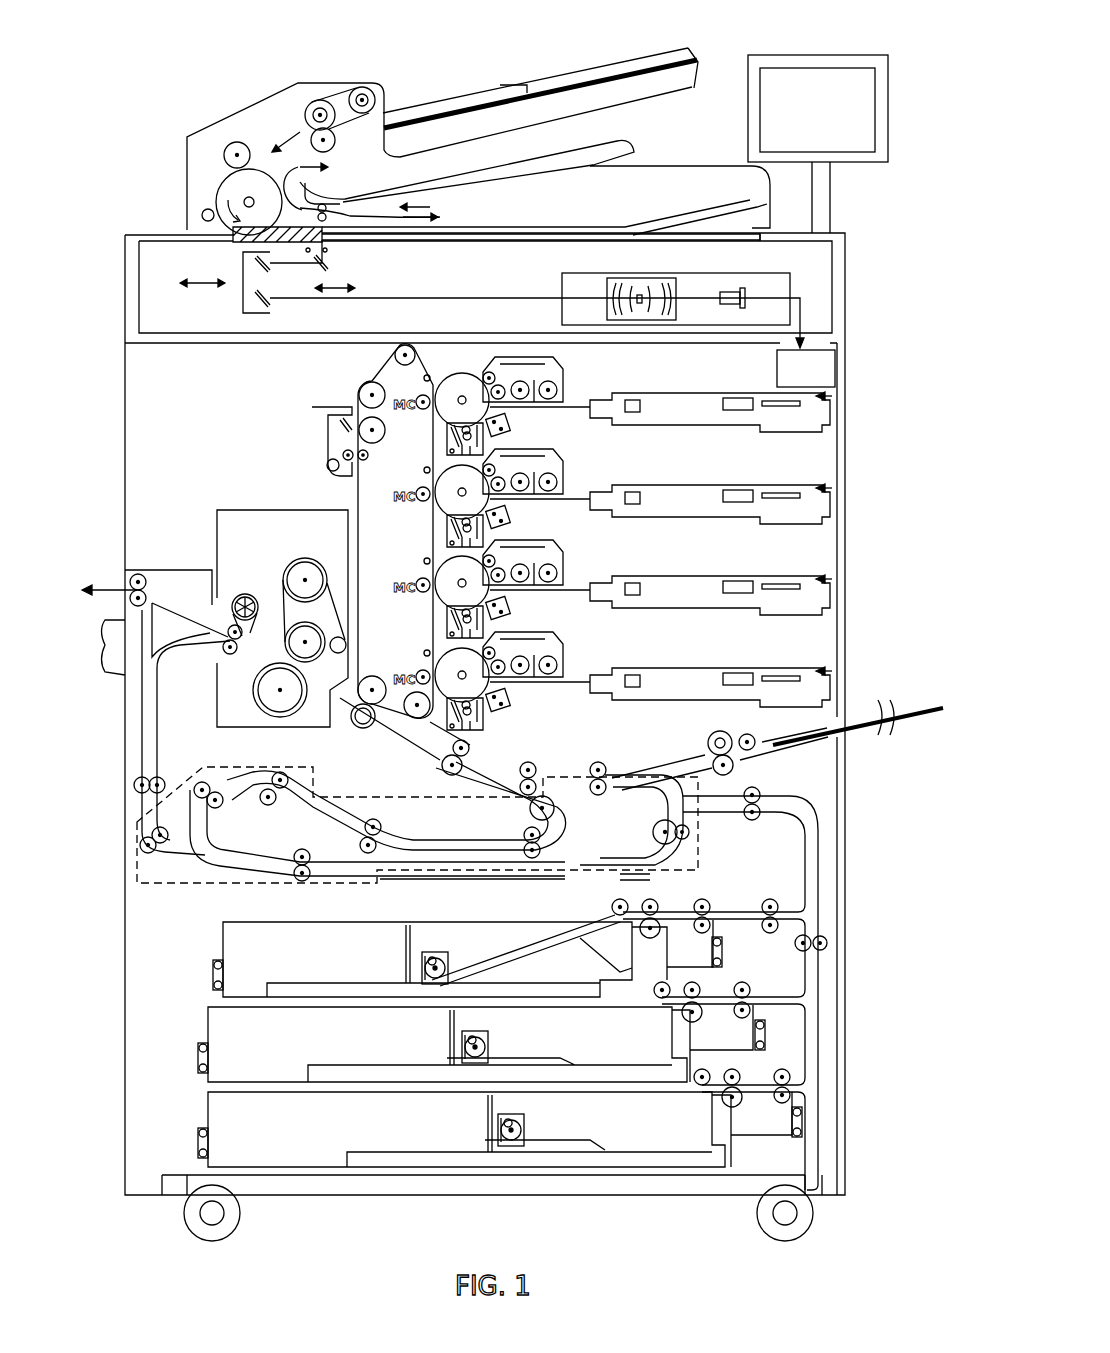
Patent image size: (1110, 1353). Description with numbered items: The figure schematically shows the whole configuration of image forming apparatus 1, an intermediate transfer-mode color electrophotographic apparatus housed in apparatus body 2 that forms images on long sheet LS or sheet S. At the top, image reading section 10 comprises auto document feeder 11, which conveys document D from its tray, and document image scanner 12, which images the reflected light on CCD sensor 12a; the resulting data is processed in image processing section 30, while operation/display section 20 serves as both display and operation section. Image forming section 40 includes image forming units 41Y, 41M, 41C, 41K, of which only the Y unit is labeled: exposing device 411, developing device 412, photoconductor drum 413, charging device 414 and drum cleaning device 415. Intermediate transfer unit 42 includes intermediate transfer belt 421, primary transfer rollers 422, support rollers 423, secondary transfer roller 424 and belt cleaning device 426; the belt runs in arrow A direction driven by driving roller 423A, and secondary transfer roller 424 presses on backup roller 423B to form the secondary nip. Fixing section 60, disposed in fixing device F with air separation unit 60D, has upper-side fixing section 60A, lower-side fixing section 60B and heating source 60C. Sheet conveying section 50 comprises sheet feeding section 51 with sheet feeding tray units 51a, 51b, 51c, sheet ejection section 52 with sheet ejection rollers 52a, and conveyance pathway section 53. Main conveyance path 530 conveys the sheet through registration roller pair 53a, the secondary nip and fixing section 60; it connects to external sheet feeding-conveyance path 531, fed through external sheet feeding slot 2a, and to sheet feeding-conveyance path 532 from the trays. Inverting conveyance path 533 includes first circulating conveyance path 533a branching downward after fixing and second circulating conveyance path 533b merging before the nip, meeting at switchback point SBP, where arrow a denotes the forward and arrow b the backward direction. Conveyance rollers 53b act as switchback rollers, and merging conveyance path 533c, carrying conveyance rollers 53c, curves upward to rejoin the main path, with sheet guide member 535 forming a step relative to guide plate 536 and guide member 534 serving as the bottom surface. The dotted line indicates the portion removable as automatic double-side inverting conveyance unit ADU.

The image forming apparatus 1 is at (462, 46).
The apparatus body 2 is at (847, 457).
The external sheet feeding slot 2a is at (845, 717).
The image reading section 10 is at (433, 145).
The auto document feeder 11 is at (130, 218).
The document image scanner 12 is at (475, 273).
The CCD sensor 12a is at (748, 293).
The operation/display section 20 is at (805, 55).
The image processing section 30 is at (832, 372).
The image forming section 40 is at (262, 436).
The image forming unit for Y component 41Y is at (607, 407).
The image forming unit for M component 41M is at (607, 525).
The image forming unit for C component 41C is at (607, 616).
The image forming unit for K component 41K is at (604, 710).
The exposing device 411 is at (677, 392).
The developing device 412 is at (563, 375).
The photoconductor drum 413 is at (450, 380).
The charging device 414 is at (508, 425).
The drum cleaning device 415 is at (447, 445).
The intermediate transfer unit 42 is at (343, 562).
The intermediate transfer belt 421 is at (357, 503).
The primary transfer roller 422 is at (423, 412).
The support rollers 423 is at (395, 355).
The driving roller 423A is at (417, 713).
The backup roller 423B is at (375, 700).
The secondary transfer roller 424 is at (358, 722).
The belt cleaning device 426 is at (310, 412).
The sheet conveying section 50 is at (495, 900).
The sheet feeding section 51 is at (444, 1027).
The sheet feeding tray unit 51a is at (237, 952).
The sheet feeding tray unit 51b is at (225, 1043).
The sheet feeding tray unit 51c is at (225, 1127).
The sheet ejection section 52 is at (155, 600).
The sheet ejection rollers 52a is at (146, 595).
The conveyance pathway section 53 is at (562, 772).
The registration roller pair 53a is at (463, 763).
The conveyance rollers 53b is at (300, 870).
The conveyance rollers 53c is at (684, 839).
The main conveyance path 530 is at (512, 770).
The external sheet feeding-conveyance path 531 is at (655, 768).
The sheet feeding-conveyance path 532 is at (822, 968).
The inverting conveyance path 533 is at (660, 841).
The first circulating conveyance path 533a is at (147, 718).
The second circulating conveyance path 533b is at (467, 820).
The merging conveyance path 533c is at (677, 817).
The guide member 534 is at (460, 879).
The sheet guide member 535 is at (637, 877).
The guide plate 536 is at (672, 855).
The fixing section 60 is at (250, 614).
The upper-side fixing section 60A is at (233, 590).
The lower-side fixing section 60B is at (242, 695).
The heating source 60C is at (303, 577).
The air separation unit 60D is at (222, 582).
The arrow A direction A is at (363, 510).
The document D is at (568, 72).
The fixing device F is at (238, 600).
The long sheet LS is at (913, 692).
The sheet S is at (520, 945).
The switchback point SBP is at (205, 852).
The automatic double-side inverting conveyance unit ADU is at (278, 767).
The arrow a is at (605, 892).
The arrow b is at (487, 892).